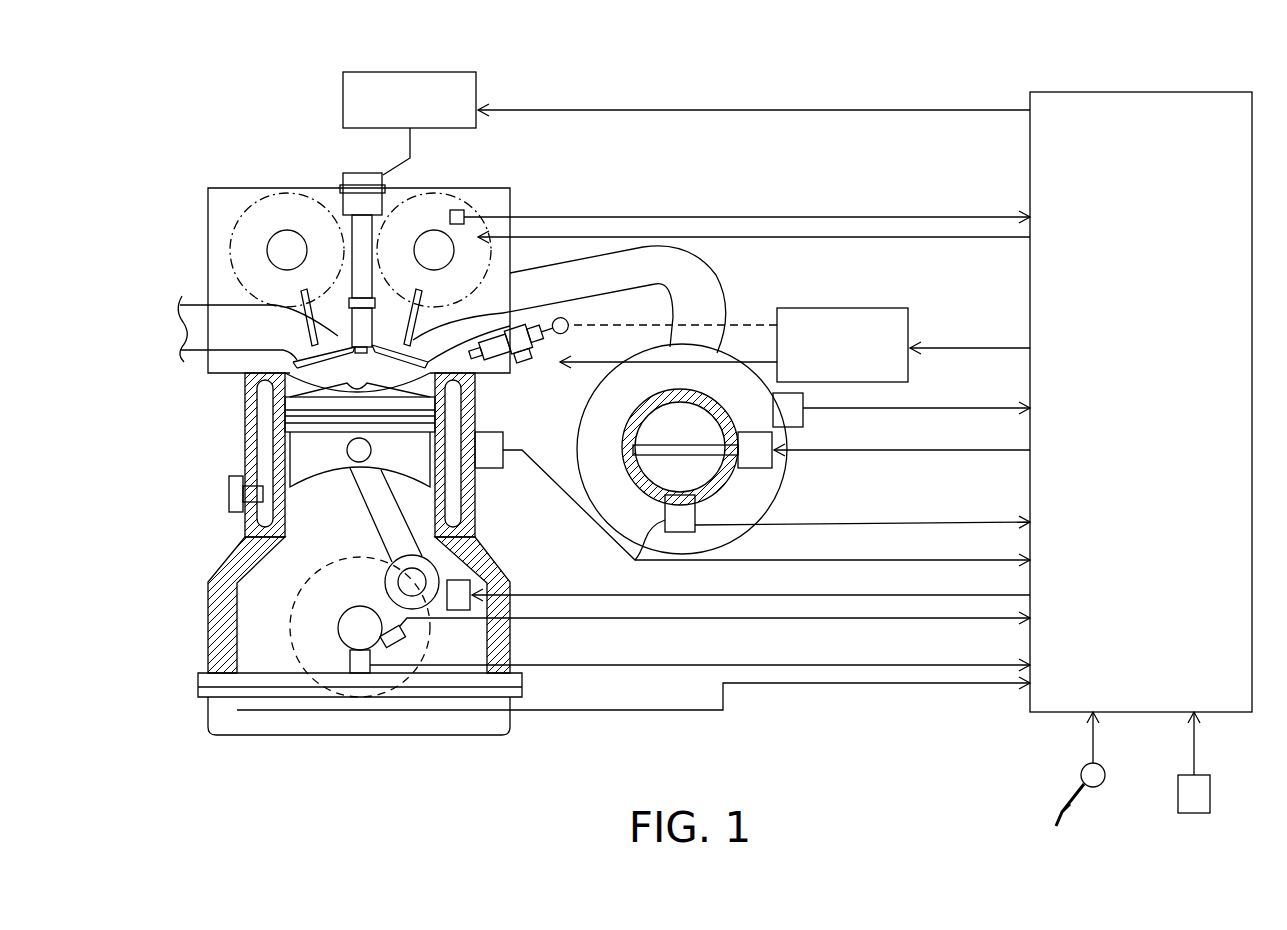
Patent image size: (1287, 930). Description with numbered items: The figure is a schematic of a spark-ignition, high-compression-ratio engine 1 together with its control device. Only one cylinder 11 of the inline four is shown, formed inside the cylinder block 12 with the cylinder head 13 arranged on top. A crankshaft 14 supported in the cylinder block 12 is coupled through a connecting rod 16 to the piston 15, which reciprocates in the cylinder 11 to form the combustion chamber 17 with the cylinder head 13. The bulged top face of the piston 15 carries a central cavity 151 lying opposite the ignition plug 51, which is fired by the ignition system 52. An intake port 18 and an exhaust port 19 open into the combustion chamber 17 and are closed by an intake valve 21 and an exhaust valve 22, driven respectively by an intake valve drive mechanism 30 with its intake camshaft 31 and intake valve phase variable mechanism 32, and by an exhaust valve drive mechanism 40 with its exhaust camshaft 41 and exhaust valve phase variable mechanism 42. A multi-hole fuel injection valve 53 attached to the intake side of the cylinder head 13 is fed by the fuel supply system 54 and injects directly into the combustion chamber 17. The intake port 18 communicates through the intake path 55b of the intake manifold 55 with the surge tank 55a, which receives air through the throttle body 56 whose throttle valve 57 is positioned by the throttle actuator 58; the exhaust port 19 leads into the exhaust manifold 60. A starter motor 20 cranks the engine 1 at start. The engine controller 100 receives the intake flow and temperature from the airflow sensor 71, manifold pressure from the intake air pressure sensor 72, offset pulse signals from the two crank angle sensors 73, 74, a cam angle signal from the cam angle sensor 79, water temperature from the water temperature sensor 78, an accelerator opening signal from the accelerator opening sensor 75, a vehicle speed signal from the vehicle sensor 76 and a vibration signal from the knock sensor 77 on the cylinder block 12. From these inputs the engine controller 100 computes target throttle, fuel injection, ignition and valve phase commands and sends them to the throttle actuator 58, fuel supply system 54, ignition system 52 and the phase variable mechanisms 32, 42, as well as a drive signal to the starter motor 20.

The engine 1 is at (200, 123).
The cylinder 11 is at (248, 400).
The cylinder block 12 is at (510, 637).
The cylinder head 13 is at (235, 375).
The crankshaft 14 is at (346, 642).
The piston 15 is at (347, 470).
The connecting rod 16 is at (372, 520).
The combustion chamber 17 is at (364, 386).
The intake port 18 is at (474, 312).
The exhaust port 19 is at (215, 341).
The starter motor 20 is at (458, 580).
The intake valve 21 is at (416, 352).
The exhaust valve 22 is at (306, 353).
The intake valve drive mechanism 30 is at (455, 208).
The intake camshaft 31 is at (420, 264).
The intake valve phase variable mechanism 32 is at (395, 183).
The exhaust valve drive mechanism 40 is at (283, 197).
The exhaust camshaft 41 is at (273, 264).
The exhaust valve phase variable mechanism 42 is at (323, 193).
The ignition plug 51 is at (357, 327).
The ignition system 52 is at (480, 90).
The fuel injection valve 53 is at (487, 380).
The fuel supply system 54 is at (848, 308).
The intake manifold 55 is at (732, 303).
The surge tank 55a is at (692, 392).
The intake path 55b is at (632, 279).
The throttle body 56 is at (645, 497).
The throttle valve 57 is at (650, 470).
The throttle actuator 58 is at (772, 466).
The exhaust manifold 60 is at (190, 303).
The airflow sensor 71 is at (635, 560).
The intake air pressure sensor 72 is at (800, 427).
The crank angle sensor 73 is at (349, 662).
The crank angle sensor 74 is at (397, 627).
The accelerator opening sensor 75 is at (1082, 773).
The vehicle sensor 76 is at (1178, 795).
The knock sensor 77 is at (489, 468).
The water temperature sensor 78 is at (229, 490).
The cam angle sensor 79 is at (462, 207).
The engine controller 100 is at (1175, 92).
The cavity 151 is at (295, 376).